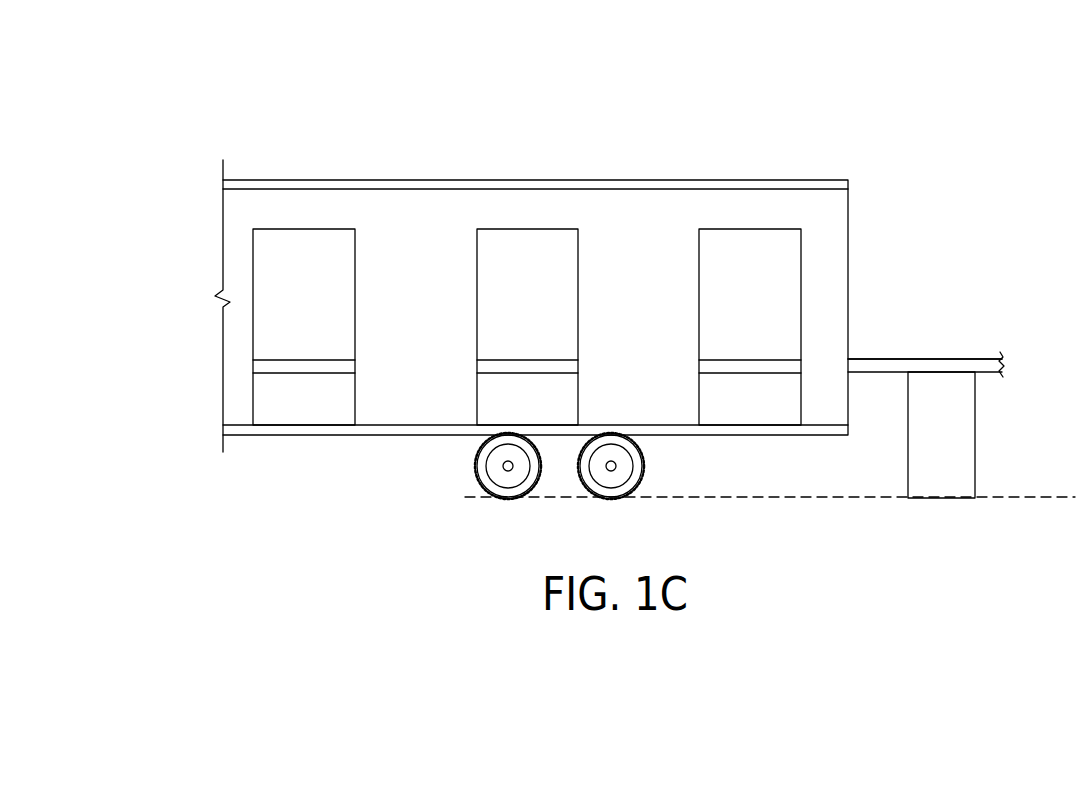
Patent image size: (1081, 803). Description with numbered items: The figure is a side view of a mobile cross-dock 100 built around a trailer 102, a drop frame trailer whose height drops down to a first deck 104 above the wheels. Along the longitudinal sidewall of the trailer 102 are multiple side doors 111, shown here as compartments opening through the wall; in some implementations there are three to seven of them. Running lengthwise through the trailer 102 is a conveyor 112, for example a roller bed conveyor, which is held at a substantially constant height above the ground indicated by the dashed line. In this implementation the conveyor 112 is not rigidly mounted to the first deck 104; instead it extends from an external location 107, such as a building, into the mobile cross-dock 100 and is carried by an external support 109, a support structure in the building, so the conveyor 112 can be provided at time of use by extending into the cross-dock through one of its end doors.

The mobile cross-dock 100 is at (247, 74).
The trailer 102 is at (478, 180).
The first deck 104 is at (400, 480).
The external location 107 is at (978, 311).
The external support 109 is at (975, 445).
The side doors 111 is at (286, 229).
The conveyor 112 is at (297, 373).